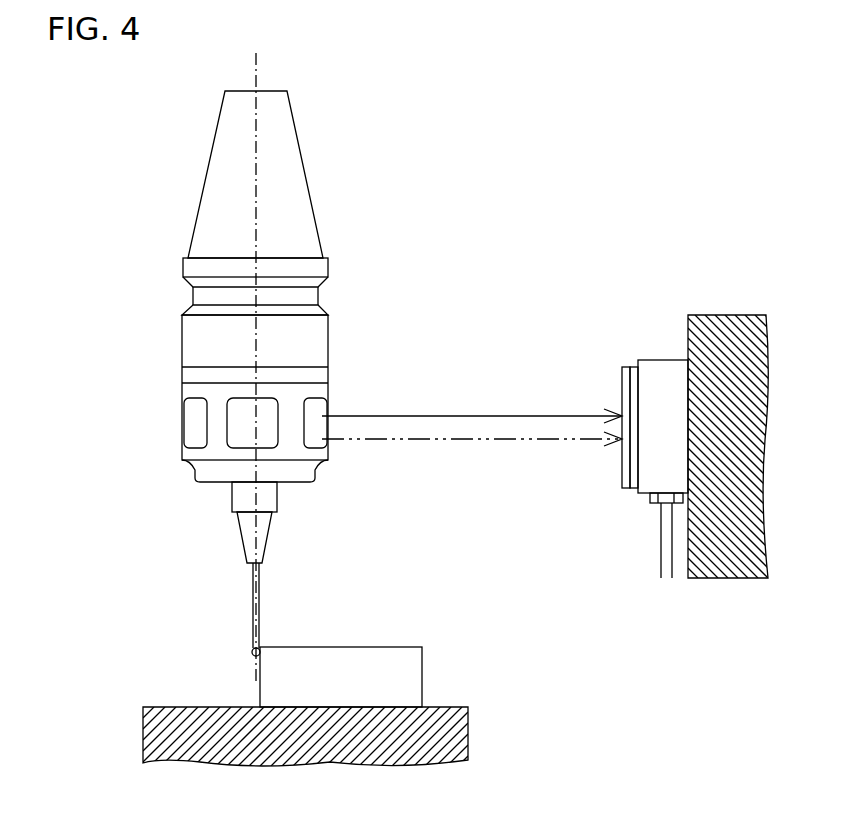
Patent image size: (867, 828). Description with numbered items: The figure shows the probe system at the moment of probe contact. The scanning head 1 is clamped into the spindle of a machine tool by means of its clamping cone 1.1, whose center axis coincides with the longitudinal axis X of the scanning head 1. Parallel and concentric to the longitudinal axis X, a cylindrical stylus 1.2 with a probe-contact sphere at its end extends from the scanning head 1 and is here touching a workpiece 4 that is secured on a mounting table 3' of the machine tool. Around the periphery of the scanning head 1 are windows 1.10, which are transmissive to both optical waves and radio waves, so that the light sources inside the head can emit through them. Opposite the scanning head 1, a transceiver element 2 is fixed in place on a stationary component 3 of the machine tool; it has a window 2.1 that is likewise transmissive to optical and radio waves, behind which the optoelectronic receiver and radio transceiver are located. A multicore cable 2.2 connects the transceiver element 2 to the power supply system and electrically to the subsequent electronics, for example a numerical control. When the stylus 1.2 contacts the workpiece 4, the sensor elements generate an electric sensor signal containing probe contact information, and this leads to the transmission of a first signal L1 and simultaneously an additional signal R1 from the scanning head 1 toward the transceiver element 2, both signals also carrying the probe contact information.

The scanning head 1 is at (155, 176).
The clamping cone 1.1 is at (283, 169).
The windows 1.10 is at (244, 410).
The cylindrical stylus 1.2 is at (259, 587).
The longitudinal axis X is at (253, 668).
The transceiver element 2 is at (650, 342).
The window 2.1 is at (622, 386).
The multicore cable 2.2 is at (666, 577).
The stationary component 3 is at (729, 419).
The mounting table 3' is at (337, 736).
The workpiece 4 is at (342, 683).
The first signal L1 is at (472, 399).
The additional signal R1 is at (472, 456).